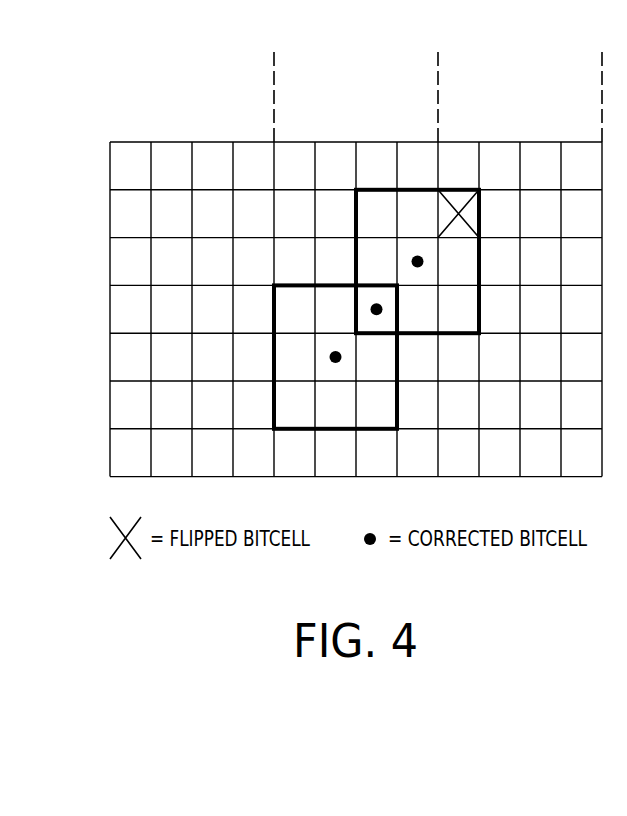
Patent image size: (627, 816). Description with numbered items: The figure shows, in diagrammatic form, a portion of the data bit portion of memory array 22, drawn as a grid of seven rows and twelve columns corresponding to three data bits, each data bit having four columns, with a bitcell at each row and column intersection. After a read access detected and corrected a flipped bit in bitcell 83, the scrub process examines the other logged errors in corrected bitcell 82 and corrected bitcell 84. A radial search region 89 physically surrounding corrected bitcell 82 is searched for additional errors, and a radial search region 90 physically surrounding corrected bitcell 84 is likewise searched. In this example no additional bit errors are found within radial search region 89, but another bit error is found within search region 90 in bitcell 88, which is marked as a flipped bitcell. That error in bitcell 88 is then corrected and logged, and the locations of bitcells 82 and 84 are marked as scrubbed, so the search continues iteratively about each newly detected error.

The array 22 is at (204, 36).
The corrected bitcell 82 is at (336, 365).
The bitcell 83 is at (376, 317).
The corrected bitcell 84 is at (418, 269).
The bitcell 88 is at (470, 209).
The radial search region 89 is at (268, 360).
The radial search region 90 is at (485, 264).